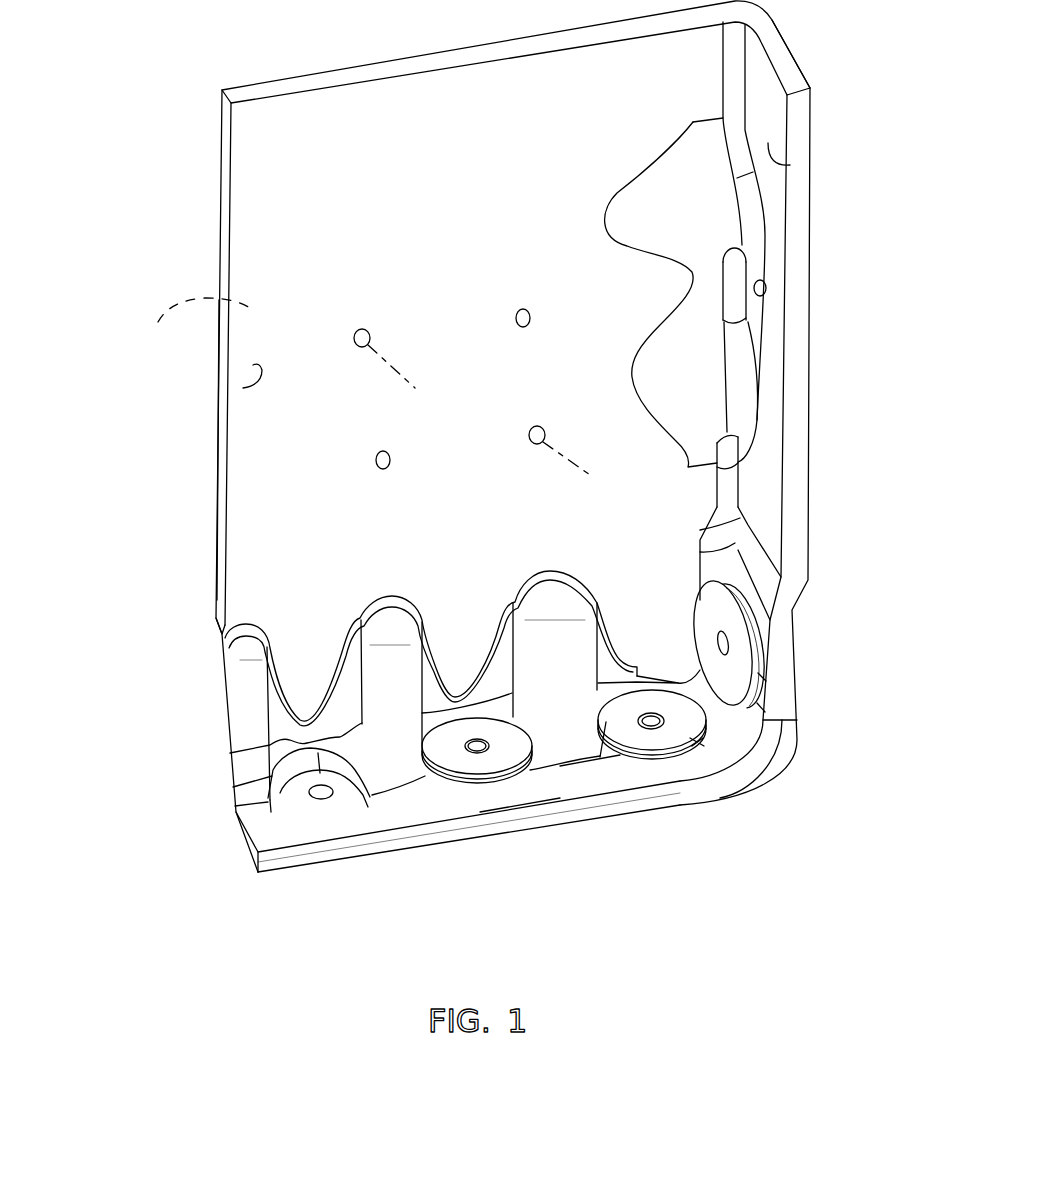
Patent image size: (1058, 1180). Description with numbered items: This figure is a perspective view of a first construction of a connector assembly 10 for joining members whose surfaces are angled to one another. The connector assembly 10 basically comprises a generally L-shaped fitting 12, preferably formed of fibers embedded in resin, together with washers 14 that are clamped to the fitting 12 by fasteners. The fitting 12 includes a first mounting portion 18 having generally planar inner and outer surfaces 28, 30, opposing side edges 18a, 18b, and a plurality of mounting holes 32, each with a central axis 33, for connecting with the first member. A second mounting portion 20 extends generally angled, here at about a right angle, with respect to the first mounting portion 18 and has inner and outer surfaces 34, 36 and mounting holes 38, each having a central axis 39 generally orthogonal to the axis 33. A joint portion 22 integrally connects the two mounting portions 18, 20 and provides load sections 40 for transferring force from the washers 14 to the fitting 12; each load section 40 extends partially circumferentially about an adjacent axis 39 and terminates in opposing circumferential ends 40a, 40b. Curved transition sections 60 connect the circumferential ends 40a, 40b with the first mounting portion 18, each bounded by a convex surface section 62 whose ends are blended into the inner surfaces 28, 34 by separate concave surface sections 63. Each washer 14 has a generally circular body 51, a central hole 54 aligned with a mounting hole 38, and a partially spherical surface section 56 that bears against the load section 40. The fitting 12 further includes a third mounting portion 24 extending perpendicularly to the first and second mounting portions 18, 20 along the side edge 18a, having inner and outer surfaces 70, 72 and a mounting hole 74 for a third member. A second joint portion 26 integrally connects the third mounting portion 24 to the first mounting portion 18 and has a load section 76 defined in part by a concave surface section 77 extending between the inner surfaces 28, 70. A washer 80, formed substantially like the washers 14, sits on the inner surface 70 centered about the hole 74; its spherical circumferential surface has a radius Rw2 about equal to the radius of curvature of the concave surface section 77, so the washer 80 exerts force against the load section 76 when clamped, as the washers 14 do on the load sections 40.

The connector assembly 10 is at (122, 727).
The fitting 12 is at (175, 550).
The washer 14 is at (484, 788).
The first mounting portion 18 is at (195, 213).
The side edge 18a is at (723, 78).
The side edge 18b is at (222, 157).
The second mounting portion 20 is at (419, 862).
The joint portion 22 is at (220, 653).
The third mounting portion 24 is at (828, 366).
The second joint portion 26 is at (642, 152).
The inner surface 28 is at (243, 388).
The outer surface 30 is at (185, 322).
The mounting hole 32 is at (531, 320).
The central axis 33 is at (407, 370).
The inner surface 34 is at (606, 780).
The outer surface 36 is at (533, 826).
The mounting hole 38 is at (310, 792).
The central axis 39 is at (325, 752).
The load section 40 is at (303, 738).
The circumferential end 40a is at (342, 796).
The circumferential end 40b is at (269, 820).
The circular body 51 is at (700, 743).
The central hole 54 is at (481, 746).
The partially spherical surface section 56 is at (642, 758).
The transition section 60 is at (252, 626).
The convex surface section 62 is at (243, 668).
The concave surface section 63 is at (235, 627).
The inner surface 70 is at (795, 162).
The outer surface 72 is at (811, 120).
The mounting hole 74 is at (766, 289).
The load section 76 is at (733, 267).
The concave surface section 77 is at (733, 300).
The washer 80 is at (758, 655).
The radius of spherical circumferential surface Rw2 is at (736, 602).